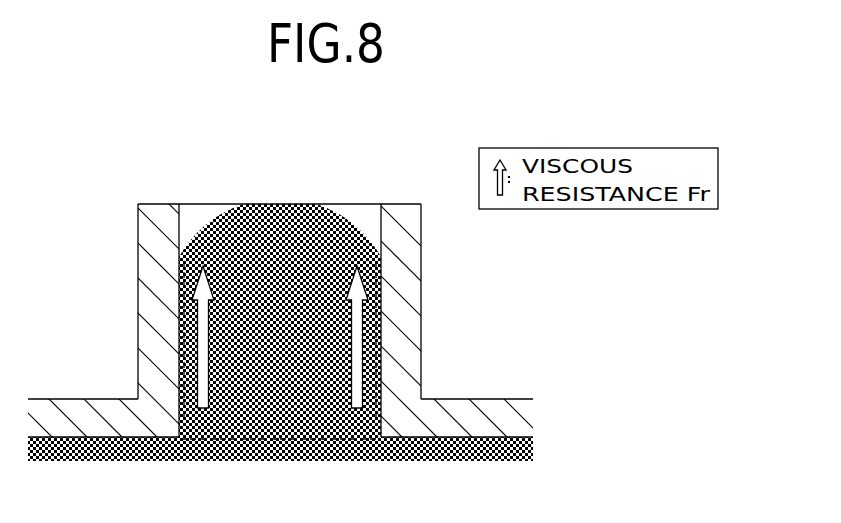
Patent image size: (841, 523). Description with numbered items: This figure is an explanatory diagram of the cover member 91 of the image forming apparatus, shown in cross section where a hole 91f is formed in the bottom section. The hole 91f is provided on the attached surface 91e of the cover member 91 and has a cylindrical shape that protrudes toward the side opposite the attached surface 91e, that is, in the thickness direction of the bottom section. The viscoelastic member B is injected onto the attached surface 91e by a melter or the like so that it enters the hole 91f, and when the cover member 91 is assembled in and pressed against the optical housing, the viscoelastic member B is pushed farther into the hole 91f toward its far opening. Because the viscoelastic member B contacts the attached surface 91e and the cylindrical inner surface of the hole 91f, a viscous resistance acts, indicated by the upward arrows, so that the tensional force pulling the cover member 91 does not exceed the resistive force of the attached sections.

The cover member 91 is at (87, 423).
The hole 91f is at (195, 217).
The attached surface 91e is at (472, 437).
The viscoelastic member B is at (385, 450).